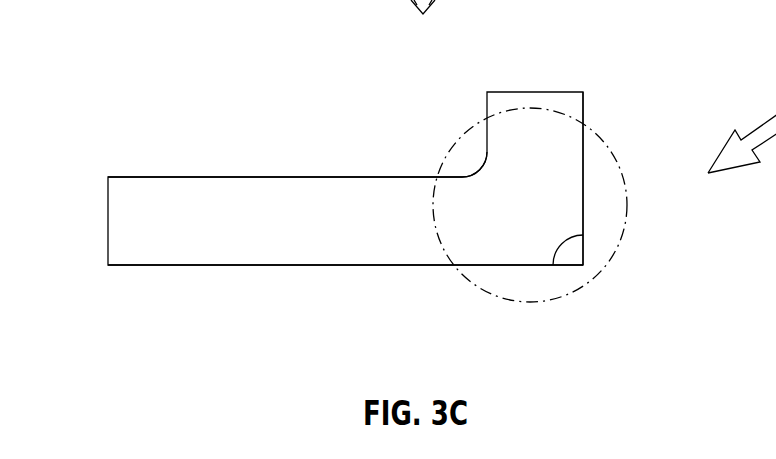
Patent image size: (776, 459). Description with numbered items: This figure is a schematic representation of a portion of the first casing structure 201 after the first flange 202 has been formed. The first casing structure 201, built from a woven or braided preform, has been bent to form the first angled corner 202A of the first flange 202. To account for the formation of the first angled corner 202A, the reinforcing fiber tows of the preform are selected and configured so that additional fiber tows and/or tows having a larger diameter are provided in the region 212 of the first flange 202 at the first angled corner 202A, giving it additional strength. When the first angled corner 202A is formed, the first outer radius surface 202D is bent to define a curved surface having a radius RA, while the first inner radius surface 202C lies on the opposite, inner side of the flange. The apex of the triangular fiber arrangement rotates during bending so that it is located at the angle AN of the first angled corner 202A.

The first casing structure 201 is at (546, 53).
The first flange 202 is at (573, 107).
The first angled corner 202A is at (587, 247).
The first inner radius surface 202C is at (210, 265).
The first outer radius surface 202D is at (212, 177).
The region 212 is at (590, 287).
The radius RA is at (482, 167).
The angle AN is at (573, 237).